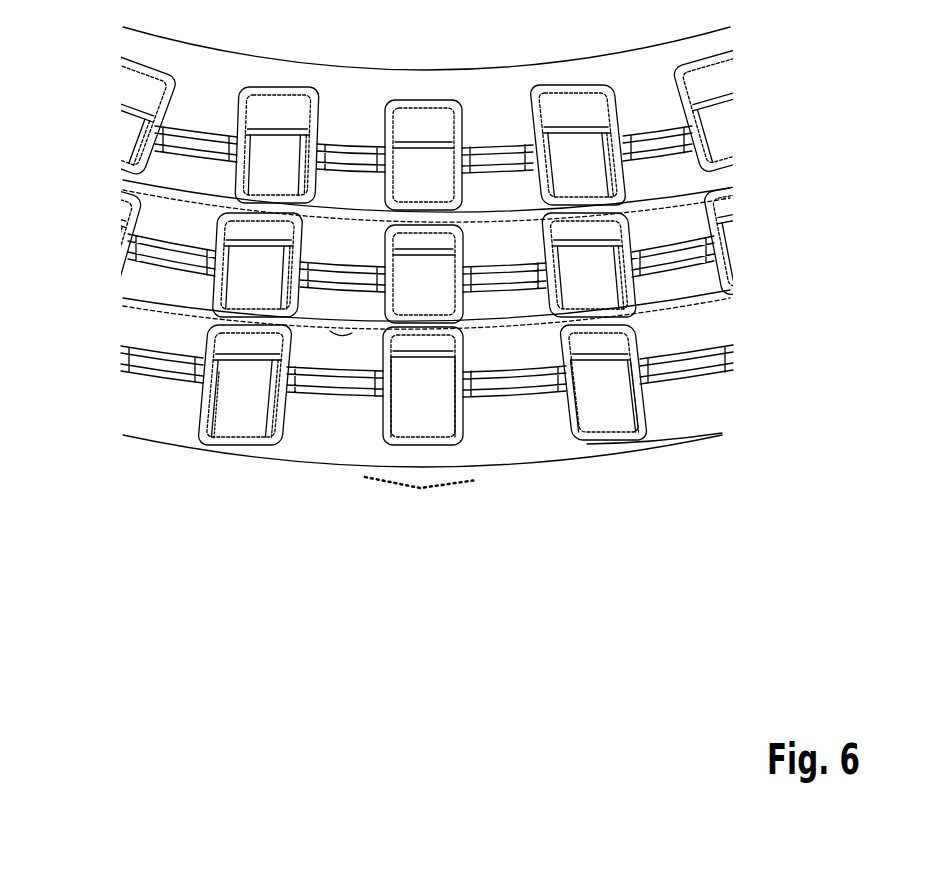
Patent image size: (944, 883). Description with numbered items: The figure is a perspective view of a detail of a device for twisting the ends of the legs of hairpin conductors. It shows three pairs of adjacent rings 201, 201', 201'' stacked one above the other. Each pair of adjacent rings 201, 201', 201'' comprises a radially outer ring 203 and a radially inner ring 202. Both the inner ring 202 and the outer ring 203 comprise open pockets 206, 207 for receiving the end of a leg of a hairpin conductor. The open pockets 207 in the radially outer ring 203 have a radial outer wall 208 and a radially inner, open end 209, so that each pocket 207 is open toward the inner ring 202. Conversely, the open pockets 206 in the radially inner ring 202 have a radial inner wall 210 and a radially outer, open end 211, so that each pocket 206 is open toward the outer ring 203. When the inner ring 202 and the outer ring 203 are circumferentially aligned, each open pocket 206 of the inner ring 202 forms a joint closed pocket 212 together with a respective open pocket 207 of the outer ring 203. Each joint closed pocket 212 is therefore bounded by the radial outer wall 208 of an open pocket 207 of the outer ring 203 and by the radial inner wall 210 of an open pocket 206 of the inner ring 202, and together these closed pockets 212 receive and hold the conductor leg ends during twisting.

The pair of adjacent rings 201 is at (436, 275).
The pair of adjacent rings 201' is at (441, 249).
The pair of adjacent rings 201'' is at (460, 127).
The radially inner ring 202 is at (667, 340).
The radially outer ring 203 is at (347, 437).
The open pocket of the inner ring 206 is at (245, 355).
The open pocket of the outer ring 207 is at (233, 418).
The radial outer wall 208 is at (612, 437).
The radially inner open end 209 is at (600, 405).
The radial inner wall 210 is at (422, 360).
The radially outer open end 211 is at (233, 375).
The joint closed pocket 212 is at (430, 410).